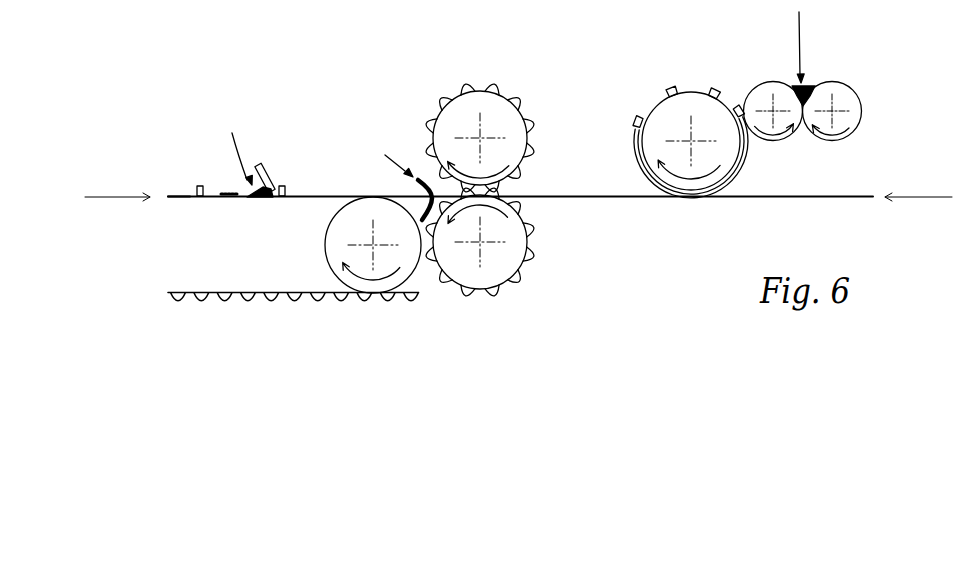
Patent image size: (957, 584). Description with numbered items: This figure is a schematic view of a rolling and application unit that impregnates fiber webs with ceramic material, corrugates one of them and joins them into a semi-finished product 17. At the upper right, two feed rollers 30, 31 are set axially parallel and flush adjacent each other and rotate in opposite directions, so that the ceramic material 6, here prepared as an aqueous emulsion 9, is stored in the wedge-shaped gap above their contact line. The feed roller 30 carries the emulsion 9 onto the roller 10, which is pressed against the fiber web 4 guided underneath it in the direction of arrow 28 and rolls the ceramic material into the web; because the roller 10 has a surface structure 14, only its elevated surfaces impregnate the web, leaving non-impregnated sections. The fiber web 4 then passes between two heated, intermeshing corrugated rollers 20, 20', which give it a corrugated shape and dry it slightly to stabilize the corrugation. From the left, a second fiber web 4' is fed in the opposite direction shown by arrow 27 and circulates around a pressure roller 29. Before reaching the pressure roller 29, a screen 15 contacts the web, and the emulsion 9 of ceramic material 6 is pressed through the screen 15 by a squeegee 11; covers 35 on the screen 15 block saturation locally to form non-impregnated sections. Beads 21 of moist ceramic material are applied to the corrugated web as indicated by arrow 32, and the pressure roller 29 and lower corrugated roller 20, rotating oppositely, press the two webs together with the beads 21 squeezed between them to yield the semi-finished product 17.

The fiber web 4 is at (520, 229).
The fiber web 4' is at (175, 156).
The ceramic material 6 is at (253, 187).
The aqueous emulsion 9 is at (510, 92).
The roller 10 is at (662, 112).
The squeegee 11 is at (274, 190).
The surface structure 14 is at (636, 126).
The screen 15 is at (215, 195).
The semi-finished product 17 is at (257, 305).
The corrugated roller 20 is at (489, 255).
The corrugated roller 20' is at (480, 114).
The beads 21 is at (421, 207).
The arrow 27 is at (118, 197).
The arrow 28 is at (917, 198).
The pressure roller 29 is at (373, 293).
The feed roller 30 is at (772, 92).
The feed roller 31 is at (858, 105).
The arrow 32 is at (410, 165).
The covers 35 is at (230, 199).